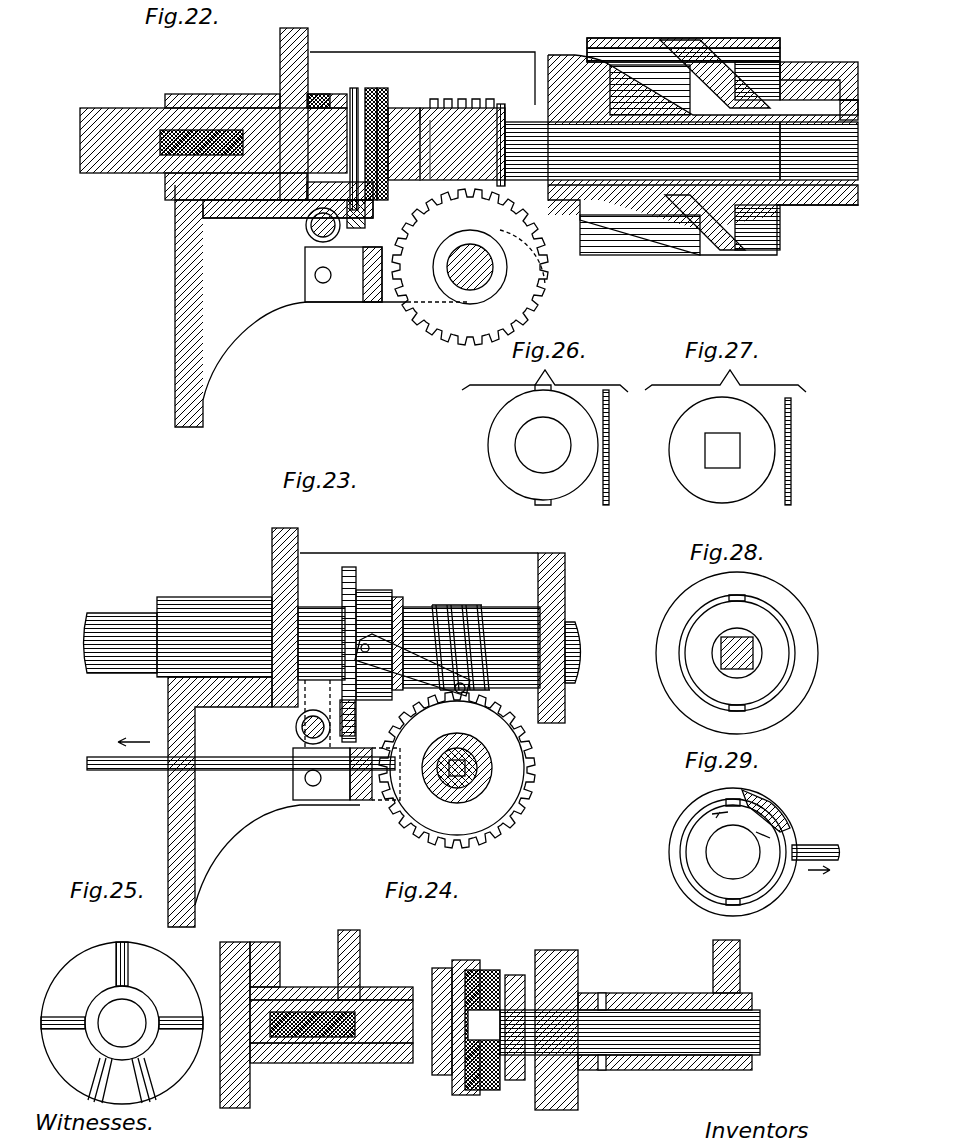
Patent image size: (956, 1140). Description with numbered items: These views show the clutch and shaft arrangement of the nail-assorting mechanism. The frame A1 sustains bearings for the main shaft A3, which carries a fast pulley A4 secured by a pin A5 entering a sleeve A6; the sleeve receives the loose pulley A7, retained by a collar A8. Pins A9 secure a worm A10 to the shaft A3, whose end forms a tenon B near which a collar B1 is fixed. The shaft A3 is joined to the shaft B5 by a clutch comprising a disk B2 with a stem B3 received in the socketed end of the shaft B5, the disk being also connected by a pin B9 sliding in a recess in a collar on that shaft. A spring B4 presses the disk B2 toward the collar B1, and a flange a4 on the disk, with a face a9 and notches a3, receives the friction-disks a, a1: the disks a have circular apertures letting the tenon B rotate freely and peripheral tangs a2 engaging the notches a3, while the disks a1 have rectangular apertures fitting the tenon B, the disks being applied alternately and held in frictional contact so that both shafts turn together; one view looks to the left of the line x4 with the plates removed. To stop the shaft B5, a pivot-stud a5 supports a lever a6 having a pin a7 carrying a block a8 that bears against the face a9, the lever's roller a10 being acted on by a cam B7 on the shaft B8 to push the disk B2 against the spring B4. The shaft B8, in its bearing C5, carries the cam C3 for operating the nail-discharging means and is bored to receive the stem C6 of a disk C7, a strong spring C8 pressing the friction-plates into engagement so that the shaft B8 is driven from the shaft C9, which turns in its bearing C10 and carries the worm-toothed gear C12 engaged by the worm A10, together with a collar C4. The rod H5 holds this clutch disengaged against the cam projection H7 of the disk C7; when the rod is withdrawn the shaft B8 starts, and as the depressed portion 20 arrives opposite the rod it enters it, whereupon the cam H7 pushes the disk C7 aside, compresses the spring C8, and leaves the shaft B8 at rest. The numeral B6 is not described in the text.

In FIG. 22, the tenon B is at (368, 214).
In FIG. 23, the tenon B is at (300, 700).
In FIG. 28, the tenon B is at (753, 664).
In FIG. 22, the collar B1 is at (425, 108).
In FIG. 22, the disk B2 is at (326, 94).
In FIG. 23, the disk B2 is at (345, 590).
In FIG. 28, the disk B2 is at (777, 640).
In FIG. 22, the stem B3 is at (257, 120).
In FIG. 23, the stem B3 is at (340, 650).
In FIG. 22, the spring B4 is at (165, 128).
In FIG. 22, the shaft B5 is at (85, 175).
In FIG. 23, the shaft B5 is at (112, 618).
In FIG. 22, the sleeve shoulder B6 is at (150, 172).
In FIG. 23, the cam B7 is at (500, 752).
In FIG. 24, the cam B7 is at (440, 968).
In FIG. 23, the shaft B8 is at (467, 770).
In FIG. 24, the shaft B8 is at (385, 1000).
In FIG. 22, the pin B9 is at (290, 212).
In FIG. 22, the friction-disk a is at (352, 92).
In FIG. 26, the friction-disk a is at (492, 440).
In FIG. 23, the friction-disk a is at (349, 654).
In FIG. 22, the friction-disk a1 is at (384, 92).
In FIG. 26, the friction-disk a1 is at (570, 462).
In FIG. 27, the friction-disk a1 is at (683, 425).
In FIG. 22, the peripheral tang a2 is at (372, 92).
In FIG. 26, the peripheral tang a2 is at (535, 390).
In FIG. 22, the notch a3 is at (395, 210).
In FIG. 28, the notch a3 is at (742, 596).
In FIG. 22, the flange a4 is at (392, 230).
In FIG. 23, the flange a4 is at (372, 596).
In FIG. 28, the flange a4 is at (778, 612).
In FIG. 22, the pivot-stud a5 is at (306, 230).
In FIG. 23, the pivot-stud a5 is at (296, 728).
In FIG. 22, the lever a6 is at (350, 225).
In FIG. 23, the lever a6 is at (372, 704).
In FIG. 23, the pin a7 is at (372, 660).
In FIG. 23, the block a8 is at (397, 596).
In FIG. 22, the face a9 is at (380, 84).
In FIG. 23, the face a9 is at (352, 580).
In FIG. 28, the face a9 is at (812, 650).
In FIG. 23, the roller a10 is at (460, 695).
In FIG. 22, the line x4 is at (401, 80).
In FIG. 22, the frame A1 is at (530, 52).
In FIG. 23, the frame A1 is at (515, 562).
In FIG. 24, the frame A1 is at (362, 948).
In FIG. 22, the main shaft A3 is at (820, 130).
In FIG. 23, the main shaft A3 is at (575, 625).
In FIG. 22, the fast pulley A4 is at (615, 38).
In FIG. 22, the pin A5 is at (780, 210).
In FIG. 22, the sleeve A6 is at (790, 110).
In FIG. 22, the loose pulley A7 is at (725, 60).
In FIG. 22, the collar A8 is at (840, 210).
In FIG. 22, the pin A9 is at (505, 108).
In FIG. 22, the worm A10 is at (462, 100).
In FIG. 23, the worm A10 is at (470, 612).
In FIG. 25, the cam C3 is at (100, 950).
In FIG. 24, the cam C3 is at (248, 952).
In FIG. 24, the collar C4 is at (518, 976).
In FIG. 23, the bearing C5 is at (445, 782).
In FIG. 24, the bearing C5 is at (316, 988).
In FIG. 23, the stem C6 is at (528, 790).
In FIG. 24, the stem C6 is at (405, 1045).
In FIG. 29, the disk C7 is at (690, 840).
In FIG. 24, the disk C7 is at (466, 962).
In FIG. 24, the spring C8 is at (330, 1045).
In FIG. 22, the shaft C9 is at (485, 290).
In FIG. 24, the shaft C9 is at (668, 1015).
In FIG. 24, the bearing C10 is at (640, 993).
In FIG. 22, the worm-toothed gear C12 is at (540, 292).
In FIG. 23, the worm-toothed gear C12 is at (528, 806).
In FIG. 24, the worm-toothed gear C12 is at (580, 968).
In FIG. 23, the rod H5 is at (105, 770).
In FIG. 29, the rod H5 is at (818, 844).
In FIG. 29, the cam projection H7 is at (782, 816).
In FIG. 29, the depressed portion 20 is at (760, 800).